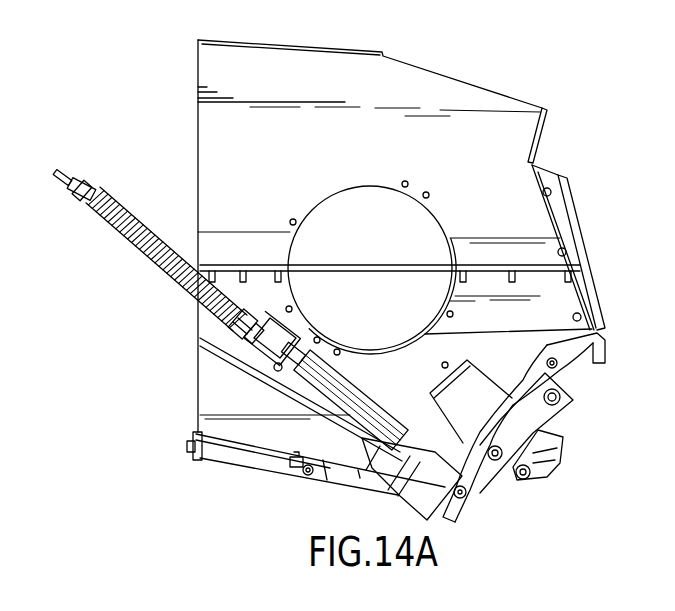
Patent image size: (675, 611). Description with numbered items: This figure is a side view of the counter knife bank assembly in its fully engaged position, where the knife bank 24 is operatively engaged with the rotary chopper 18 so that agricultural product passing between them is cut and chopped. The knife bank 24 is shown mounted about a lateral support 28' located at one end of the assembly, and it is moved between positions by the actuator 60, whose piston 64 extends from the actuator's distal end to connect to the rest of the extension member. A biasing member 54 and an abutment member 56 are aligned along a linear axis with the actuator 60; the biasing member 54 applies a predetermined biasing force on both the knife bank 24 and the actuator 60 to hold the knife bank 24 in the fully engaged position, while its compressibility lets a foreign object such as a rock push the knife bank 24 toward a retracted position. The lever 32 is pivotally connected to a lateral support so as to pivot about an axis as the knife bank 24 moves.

The rotary chopper 18 is at (372, 185).
The lateral support 28' is at (577, 249).
The biasing member 54 is at (105, 224).
The abutment member 56 is at (250, 332).
The piston 64 is at (262, 340).
The actuator 60 is at (327, 406).
The lever 32 is at (480, 497).
The knife bank 24 is at (563, 451).